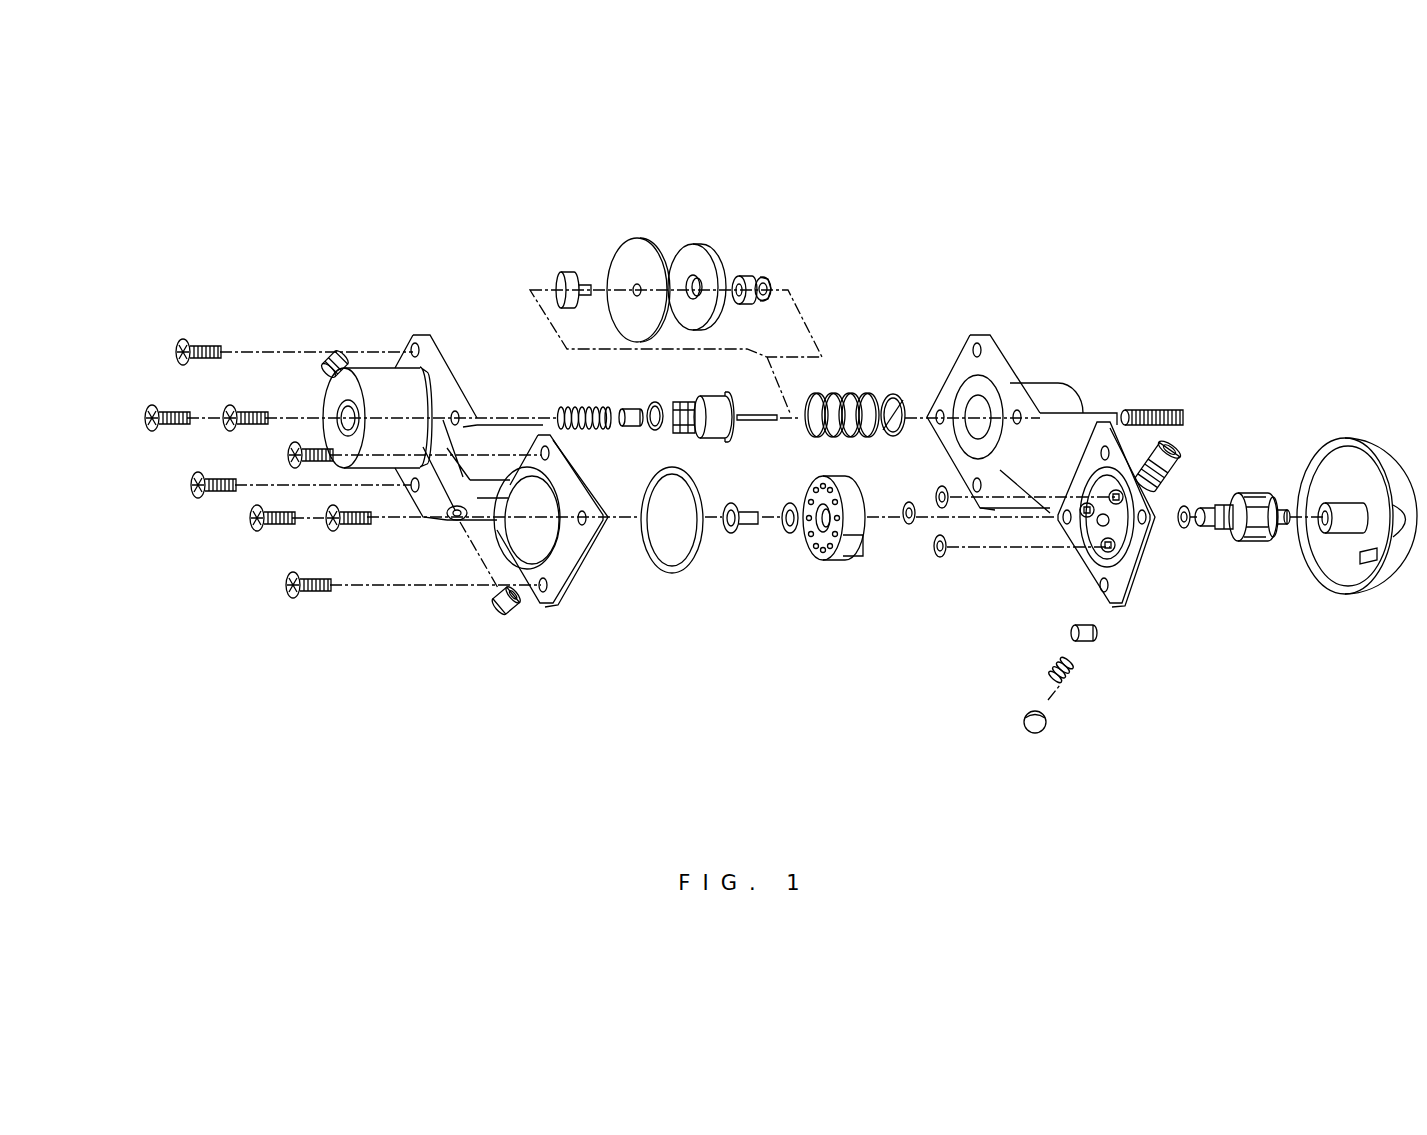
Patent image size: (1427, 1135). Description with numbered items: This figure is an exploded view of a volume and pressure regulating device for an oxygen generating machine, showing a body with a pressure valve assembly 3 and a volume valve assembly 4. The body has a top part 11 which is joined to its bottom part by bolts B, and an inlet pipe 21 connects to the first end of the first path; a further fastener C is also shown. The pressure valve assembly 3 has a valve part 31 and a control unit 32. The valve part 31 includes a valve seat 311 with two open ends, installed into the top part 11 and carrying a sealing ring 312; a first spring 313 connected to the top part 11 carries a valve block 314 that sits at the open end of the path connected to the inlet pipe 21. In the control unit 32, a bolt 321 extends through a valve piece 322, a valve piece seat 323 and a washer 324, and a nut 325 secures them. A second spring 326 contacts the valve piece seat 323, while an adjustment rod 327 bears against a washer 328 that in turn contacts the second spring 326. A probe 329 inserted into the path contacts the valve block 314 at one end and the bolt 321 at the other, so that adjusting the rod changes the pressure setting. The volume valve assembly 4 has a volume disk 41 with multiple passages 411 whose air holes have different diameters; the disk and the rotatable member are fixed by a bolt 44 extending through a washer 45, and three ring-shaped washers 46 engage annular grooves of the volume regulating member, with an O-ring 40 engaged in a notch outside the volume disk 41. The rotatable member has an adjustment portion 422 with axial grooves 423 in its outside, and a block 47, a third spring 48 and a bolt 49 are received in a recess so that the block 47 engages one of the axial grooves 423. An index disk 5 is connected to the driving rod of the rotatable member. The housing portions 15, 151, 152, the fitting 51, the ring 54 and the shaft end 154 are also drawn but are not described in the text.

The bolts B is at (200, 343).
The nut C is at (495, 606).
The pressure valve assembly 3 is at (460, 338).
The top part 11 is at (427, 333).
The inlet pipe 21 is at (330, 350).
The valve part 31 is at (515, 348).
The valve seat 311 is at (700, 393).
The sealing ring 312 is at (652, 402).
The first spring 313 is at (560, 410).
The valve block 314 is at (620, 410).
The control unit 32 is at (917, 178).
The bolt 321 is at (558, 275).
The valve piece 322 is at (628, 253).
The valve piece seat 323 is at (692, 260).
The washer 324 is at (738, 275).
The nut 325 is at (765, 278).
The second spring 326 is at (828, 397).
The adjustment rod 327 is at (1140, 420).
The washer 328 is at (893, 397).
The probe 329 is at (757, 415).
The volume valve assembly 4 is at (636, 690).
The O-ring 40 is at (658, 567).
The volume disk 41 is at (840, 557).
The passages 411 is at (822, 550).
The bolt 44 is at (733, 535).
The washer 45 is at (788, 537).
The ring-shaped washers 46 is at (907, 527).
The block 47 is at (1092, 645).
The third spring 48 is at (1060, 682).
The bolt 49 is at (1023, 720).
The housing 15 is at (993, 610).
The rear plate 151 is at (967, 467).
The front flange 152 is at (1073, 550).
The set screw 51 is at (1163, 450).
The ring 54 is at (1264, 490).
The index disk 5 is at (1322, 533).
The shaft end 154 is at (1288, 508).
The adjustment portion 422 is at (1267, 540).
The axial grooves 423 is at (1240, 535).